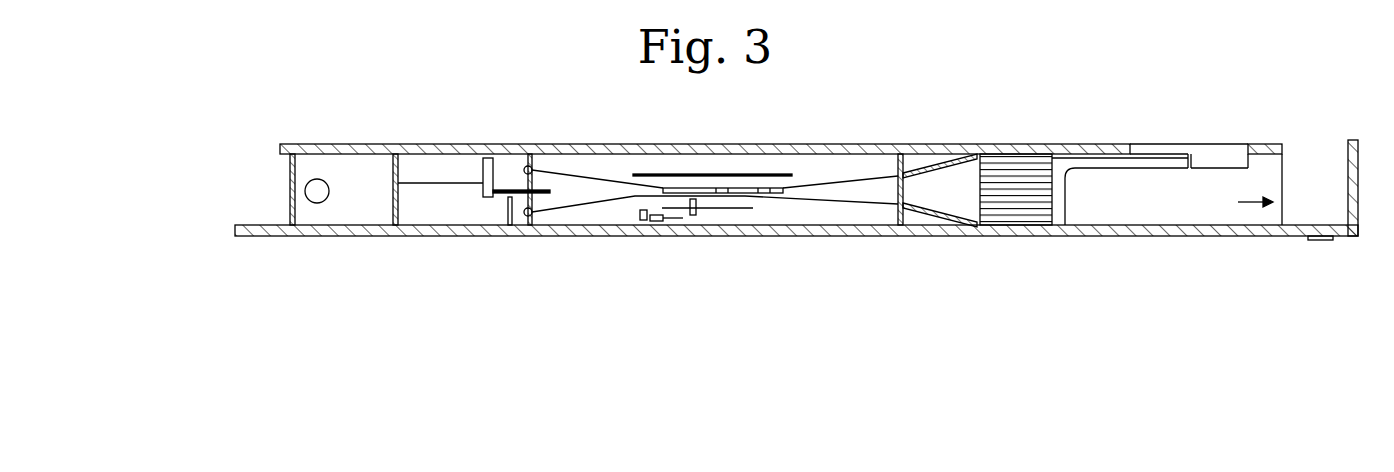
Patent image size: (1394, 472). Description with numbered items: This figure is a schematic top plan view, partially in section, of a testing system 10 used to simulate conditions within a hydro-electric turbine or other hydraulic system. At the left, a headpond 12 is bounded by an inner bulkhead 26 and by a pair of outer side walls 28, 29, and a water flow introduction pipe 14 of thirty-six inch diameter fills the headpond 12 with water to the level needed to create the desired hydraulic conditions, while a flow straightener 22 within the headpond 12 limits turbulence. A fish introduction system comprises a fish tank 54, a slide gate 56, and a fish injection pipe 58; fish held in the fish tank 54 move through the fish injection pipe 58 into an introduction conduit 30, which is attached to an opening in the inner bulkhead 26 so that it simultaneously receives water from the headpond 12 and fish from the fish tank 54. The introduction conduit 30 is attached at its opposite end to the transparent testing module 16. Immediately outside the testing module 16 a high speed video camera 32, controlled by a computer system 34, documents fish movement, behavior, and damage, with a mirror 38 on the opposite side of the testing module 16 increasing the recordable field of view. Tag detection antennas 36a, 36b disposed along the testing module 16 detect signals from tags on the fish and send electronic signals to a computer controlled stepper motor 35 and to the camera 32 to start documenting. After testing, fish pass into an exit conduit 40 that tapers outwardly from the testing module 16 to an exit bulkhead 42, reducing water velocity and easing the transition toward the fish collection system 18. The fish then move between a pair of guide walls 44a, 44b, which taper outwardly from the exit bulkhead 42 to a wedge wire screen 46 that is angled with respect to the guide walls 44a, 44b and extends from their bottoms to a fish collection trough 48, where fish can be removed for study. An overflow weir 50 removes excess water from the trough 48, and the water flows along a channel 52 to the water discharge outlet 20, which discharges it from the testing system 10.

The testing system 10 is at (872, 298).
The headpond 12 is at (437, 128).
The water flow introduction pipe 14 is at (319, 203).
The testing module 16 is at (650, 195).
The fish collection system 18 is at (1038, 113).
The water discharge outlet 20 is at (1320, 240).
The flow straightener 22 is at (405, 215).
The inner bulkhead 26 is at (560, 195).
The side wall 28 is at (280, 152).
The side wall 29 is at (235, 233).
The introduction conduit 30 is at (597, 205).
The high speed video camera 32 is at (693, 215).
The computer system 34 is at (644, 222).
The computer controlled stepper motor 35 is at (657, 221).
The tag detection antenna 36a is at (720, 194).
The tag detection antenna 36b is at (765, 194).
The mirror 38 is at (790, 168).
The exit conduit 40 is at (886, 198).
The exit bulkhead 42 is at (901, 165).
The guide wall 44a is at (950, 214).
The guide wall 44b is at (930, 170).
The screen 46 is at (1022, 208).
The fish collection trough 48 is at (1075, 200).
The overflow weir 50 is at (1190, 170).
The channel 52 is at (1207, 200).
The fish tank 54 is at (483, 200).
The slide gate 56 is at (500, 210).
The fish injection pipe 58 is at (500, 195).